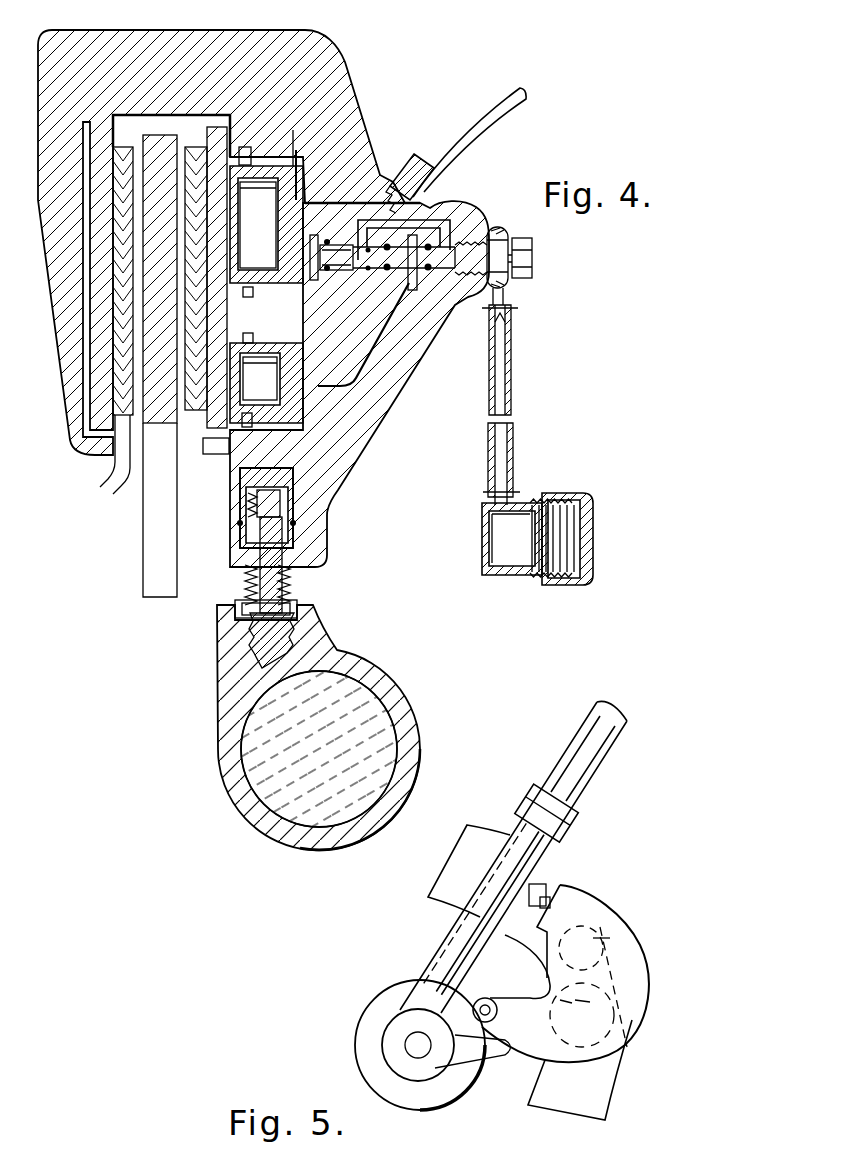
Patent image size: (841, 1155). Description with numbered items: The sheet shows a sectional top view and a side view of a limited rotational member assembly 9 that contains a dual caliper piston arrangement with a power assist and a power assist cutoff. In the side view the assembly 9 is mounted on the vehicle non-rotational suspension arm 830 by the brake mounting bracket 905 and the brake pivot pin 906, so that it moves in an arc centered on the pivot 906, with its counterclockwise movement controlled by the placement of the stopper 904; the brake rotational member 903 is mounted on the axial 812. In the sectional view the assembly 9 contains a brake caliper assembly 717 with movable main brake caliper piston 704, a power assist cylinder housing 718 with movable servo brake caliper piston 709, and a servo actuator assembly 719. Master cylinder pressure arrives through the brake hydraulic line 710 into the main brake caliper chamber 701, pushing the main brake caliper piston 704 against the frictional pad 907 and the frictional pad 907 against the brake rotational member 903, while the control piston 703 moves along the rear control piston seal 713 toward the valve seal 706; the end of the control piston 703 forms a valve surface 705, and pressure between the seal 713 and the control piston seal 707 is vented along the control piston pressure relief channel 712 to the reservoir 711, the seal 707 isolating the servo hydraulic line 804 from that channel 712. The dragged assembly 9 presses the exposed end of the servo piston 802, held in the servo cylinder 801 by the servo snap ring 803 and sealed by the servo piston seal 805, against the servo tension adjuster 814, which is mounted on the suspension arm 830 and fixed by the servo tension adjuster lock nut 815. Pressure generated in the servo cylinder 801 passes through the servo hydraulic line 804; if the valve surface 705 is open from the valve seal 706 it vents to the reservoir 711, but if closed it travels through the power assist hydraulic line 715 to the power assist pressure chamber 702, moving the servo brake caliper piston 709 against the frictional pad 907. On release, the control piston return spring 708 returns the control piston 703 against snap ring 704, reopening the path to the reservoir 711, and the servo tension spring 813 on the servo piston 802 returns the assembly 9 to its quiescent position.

In FIG. 4, the limited rotational member assembly 9 is at (390, 54).
In FIG. 5, the limited rotational member assembly 9 is at (628, 919).
In FIG. 4, the main brake caliper chamber 701 is at (295, 189).
In FIG. 4, the power assist pressure chamber 702 is at (286, 362).
In FIG. 4, the control piston 703 is at (342, 262).
In FIG. 4, the main brake caliper piston 704 is at (267, 167).
In FIG. 5, the main brake caliper piston 704 is at (663, 1000).
In FIG. 4, the valve surface 705 is at (443, 222).
In FIG. 4, the valve seal 706 is at (452, 297).
In FIG. 4, the control piston seal 707 is at (387, 272).
In FIG. 4, the control piston return spring 708 is at (363, 250).
In FIG. 4, the servo brake caliper piston 709 is at (280, 377).
In FIG. 5, the servo brake caliper piston 709 is at (627, 940).
In FIG. 4, the brake hydraulic line 710 is at (497, 92).
In FIG. 4, the reservoir 711 is at (570, 497).
In FIG. 4, the control piston pressure relief channel 712 is at (418, 250).
In FIG. 4, the rear control piston seal 713 is at (310, 228).
In FIG. 4, the power assist hydraulic line 715 is at (363, 405).
In FIG. 4, the brake caliper assembly 717 is at (297, 153).
In FIG. 4, the power assist cylinder housing 718 is at (353, 420).
In FIG. 4, the servo actuator assembly 719 is at (343, 470).
In FIG. 5, the servo actuator assembly 719 is at (570, 897).
In FIG. 4, the servo cylinder 801 is at (277, 478).
In FIG. 4, the servo piston 802 is at (247, 507).
In FIG. 4, the servo snap ring 803 is at (237, 557).
In FIG. 4, the servo hydraulic line 804 is at (410, 358).
In FIG. 4, the servo piston seal 805 is at (293, 523).
In FIG. 5, the axial 812 is at (412, 1045).
In FIG. 4, the servo tension spring 813 is at (292, 582).
In FIG. 4, the servo tension adjuster 814 is at (275, 648).
In FIG. 4, the servo tension adjuster lock nut 815 is at (233, 610).
In FIG. 4, the vehicle non-rotational suspension arm 830 is at (223, 764).
In FIG. 5, the vehicle non-rotational suspension arm 830 is at (533, 790).
In FIG. 4, the brake rotational member 903 is at (150, 545).
In FIG. 5, the stopper 904 is at (508, 1055).
In FIG. 5, the brake mounting bracket 905 is at (410, 982).
In FIG. 5, the brake pivot pin 906 is at (492, 1000).
In FIG. 4, the frictional pad 907 is at (207, 425).